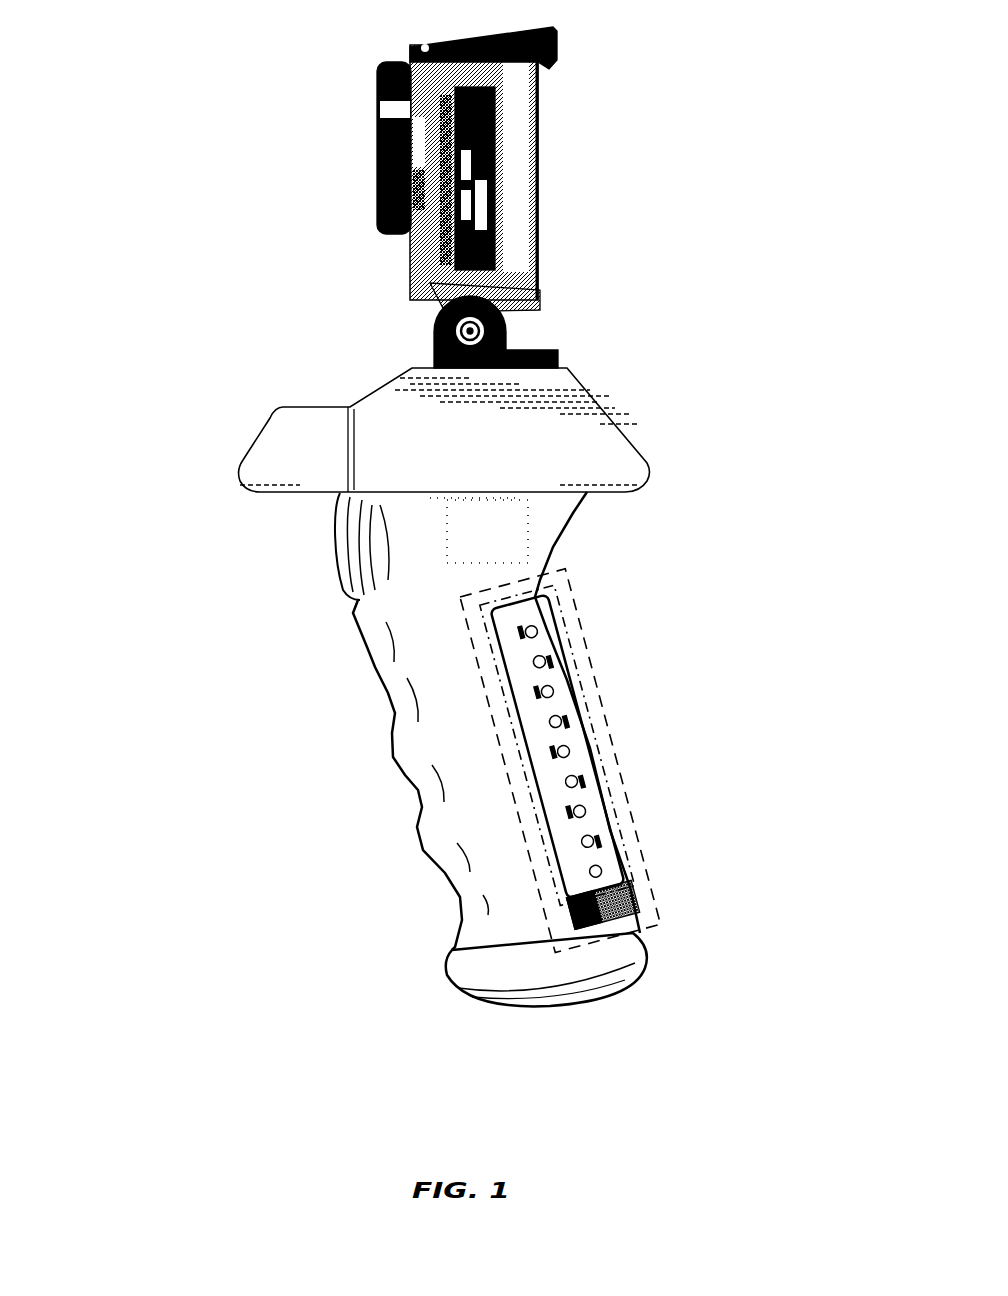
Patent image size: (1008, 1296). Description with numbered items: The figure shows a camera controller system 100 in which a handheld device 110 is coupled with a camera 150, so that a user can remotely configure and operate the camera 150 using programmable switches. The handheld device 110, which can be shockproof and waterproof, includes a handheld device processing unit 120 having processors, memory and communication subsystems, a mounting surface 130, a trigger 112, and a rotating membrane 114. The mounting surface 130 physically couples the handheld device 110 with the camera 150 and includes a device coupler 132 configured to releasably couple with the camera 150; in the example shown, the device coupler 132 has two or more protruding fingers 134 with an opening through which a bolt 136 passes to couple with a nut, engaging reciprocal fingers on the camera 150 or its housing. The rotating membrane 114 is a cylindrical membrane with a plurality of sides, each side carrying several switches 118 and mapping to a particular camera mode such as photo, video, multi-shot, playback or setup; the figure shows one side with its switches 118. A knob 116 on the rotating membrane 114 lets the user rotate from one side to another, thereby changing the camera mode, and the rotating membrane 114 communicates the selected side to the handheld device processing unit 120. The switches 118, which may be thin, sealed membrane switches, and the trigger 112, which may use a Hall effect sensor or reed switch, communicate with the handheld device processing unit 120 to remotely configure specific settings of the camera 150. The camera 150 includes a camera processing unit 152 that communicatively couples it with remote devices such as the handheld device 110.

The camera controller system 100 is at (118, 95).
The handheld device 110 is at (465, 630).
The trigger 112 is at (323, 570).
The rotating membrane 114 is at (573, 603).
The knob 116 is at (623, 910).
The switches 118 is at (590, 720).
The handheld device processing unit 120 is at (527, 518).
The mounting surface 130 is at (633, 403).
The device coupler 132 is at (550, 323).
The protruding fingers 134 is at (430, 315).
The bolt 136 is at (437, 338).
The camera 150 is at (579, 169).
The camera processing unit 152 is at (563, 118).